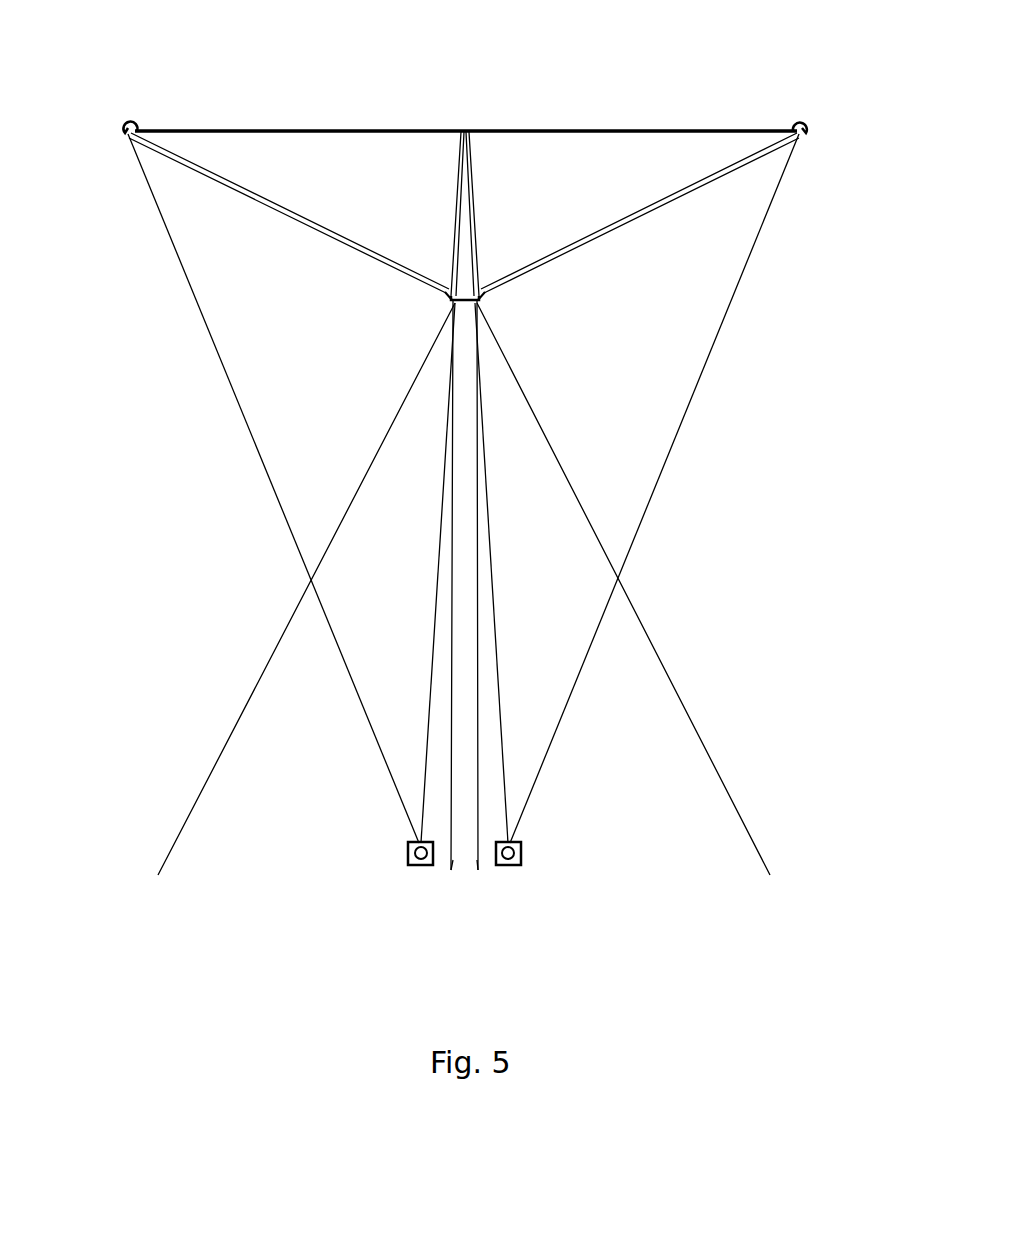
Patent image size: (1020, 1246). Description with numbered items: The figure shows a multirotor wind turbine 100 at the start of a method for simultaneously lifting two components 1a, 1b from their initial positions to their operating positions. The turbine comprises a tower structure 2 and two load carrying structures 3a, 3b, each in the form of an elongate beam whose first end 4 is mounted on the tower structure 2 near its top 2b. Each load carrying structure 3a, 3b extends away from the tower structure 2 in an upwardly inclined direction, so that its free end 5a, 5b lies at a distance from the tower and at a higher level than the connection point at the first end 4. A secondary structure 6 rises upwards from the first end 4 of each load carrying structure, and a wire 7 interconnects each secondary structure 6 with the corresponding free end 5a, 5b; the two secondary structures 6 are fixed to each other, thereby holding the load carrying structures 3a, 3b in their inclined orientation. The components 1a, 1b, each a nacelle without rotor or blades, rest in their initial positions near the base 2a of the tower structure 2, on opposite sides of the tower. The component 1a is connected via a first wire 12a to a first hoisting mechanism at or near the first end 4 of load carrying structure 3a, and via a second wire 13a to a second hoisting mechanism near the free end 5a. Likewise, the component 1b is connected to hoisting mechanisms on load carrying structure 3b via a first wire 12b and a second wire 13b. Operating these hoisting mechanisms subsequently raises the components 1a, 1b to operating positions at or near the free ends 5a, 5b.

The multirotor wind turbine 100 is at (649, 88).
The wire 7 is at (357, 128).
The free end of load carrying structure 5a is at (806, 138).
The free end of load carrying structure 5b is at (124, 137).
The load carrying structure 3a is at (630, 214).
The load carrying structure 3b is at (318, 214).
The secondary structure 6 is at (456, 234).
The first end of load carrying structure 4 is at (448, 294).
The top of tower structure 2b is at (455, 308).
The tower structure 2 is at (462, 655).
The base of tower structure 2a is at (460, 862).
The first wire 12a is at (490, 505).
The first wire 12b is at (440, 510).
The second wire 13a is at (690, 428).
The second wire 13b is at (246, 422).
The component 1a is at (522, 860).
The component 1b is at (408, 862).